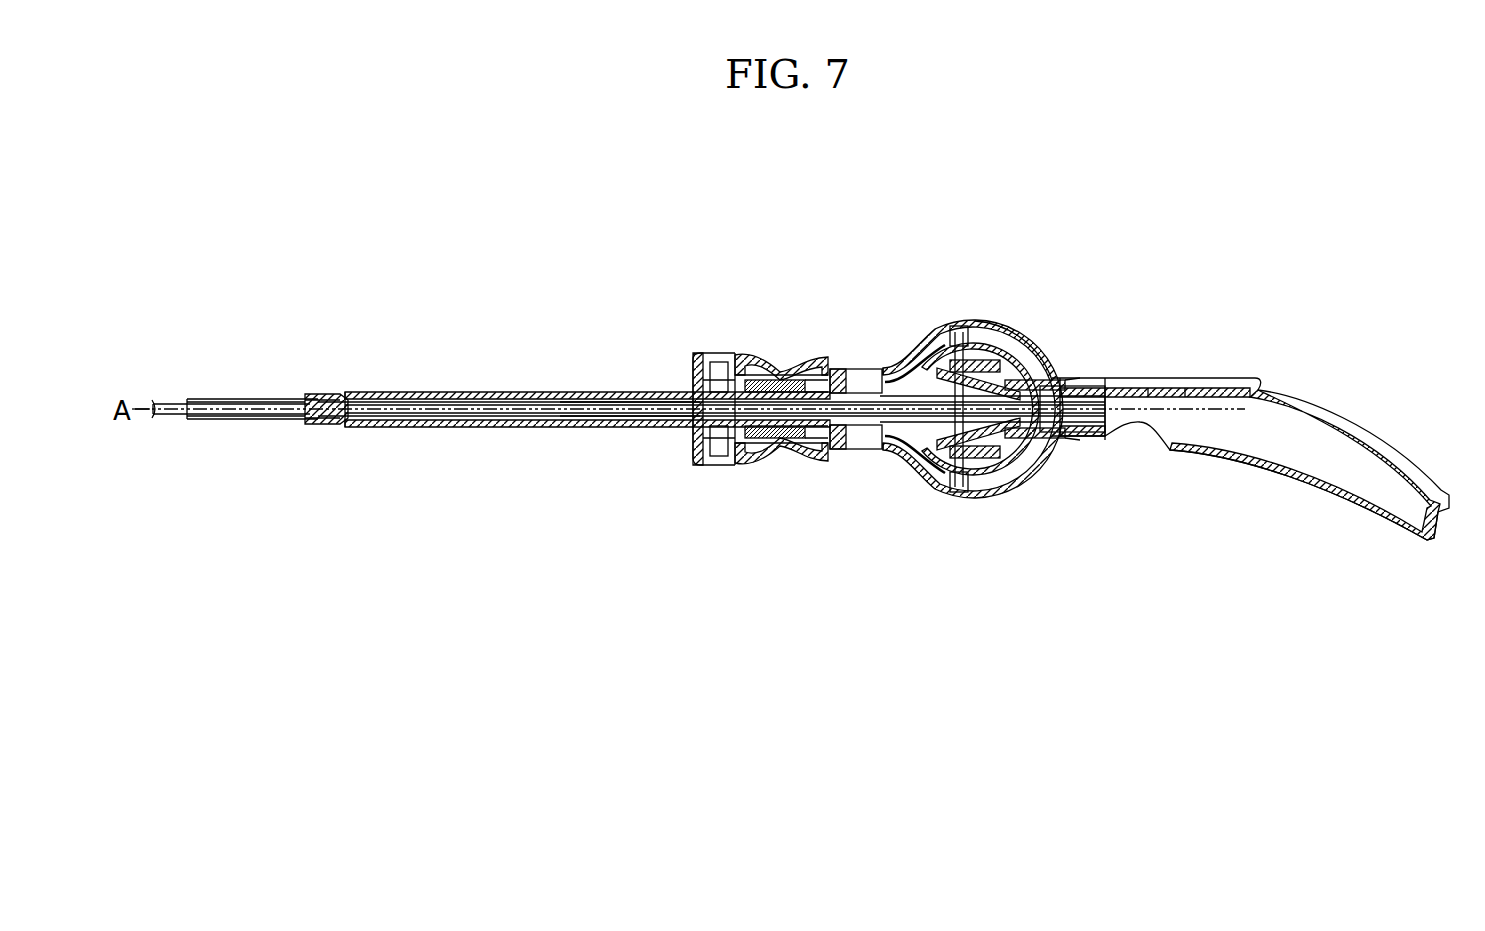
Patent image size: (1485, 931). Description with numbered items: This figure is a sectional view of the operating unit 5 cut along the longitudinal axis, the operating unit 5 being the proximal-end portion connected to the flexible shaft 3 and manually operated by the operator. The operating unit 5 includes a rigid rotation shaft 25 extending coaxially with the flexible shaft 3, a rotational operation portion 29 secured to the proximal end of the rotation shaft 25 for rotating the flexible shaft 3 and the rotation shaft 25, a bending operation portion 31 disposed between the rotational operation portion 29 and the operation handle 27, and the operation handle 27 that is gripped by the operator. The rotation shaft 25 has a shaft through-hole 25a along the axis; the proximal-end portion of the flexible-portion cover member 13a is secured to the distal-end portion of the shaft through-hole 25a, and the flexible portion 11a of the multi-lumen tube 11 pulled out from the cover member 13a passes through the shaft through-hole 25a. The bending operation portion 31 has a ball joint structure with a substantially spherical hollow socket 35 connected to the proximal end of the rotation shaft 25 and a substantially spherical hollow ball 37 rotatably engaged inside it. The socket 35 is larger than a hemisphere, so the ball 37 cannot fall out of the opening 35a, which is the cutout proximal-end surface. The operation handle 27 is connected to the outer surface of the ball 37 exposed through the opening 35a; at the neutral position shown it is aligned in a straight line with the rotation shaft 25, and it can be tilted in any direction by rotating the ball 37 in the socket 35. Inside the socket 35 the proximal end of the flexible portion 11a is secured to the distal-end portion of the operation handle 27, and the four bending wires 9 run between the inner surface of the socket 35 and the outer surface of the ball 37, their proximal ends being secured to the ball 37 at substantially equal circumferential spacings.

The flexible shaft 3 is at (228, 440).
The operating unit 5 is at (1242, 325).
The bending wires 9 is at (910, 362).
The multi-lumen tube 11 is at (460, 385).
The flexible portion 11a is at (603, 418).
The flexible-portion cover member 13a is at (277, 422).
The rotation shaft 25 is at (530, 428).
The shaft through-hole 25a is at (403, 424).
The operation handle 27 is at (1355, 405).
The rotational operation portion 29 is at (790, 468).
The bending operation portion 31 is at (1004, 482).
The socket 35 is at (952, 498).
The opening 35a is at (1018, 345).
The ball 37 is at (922, 585).